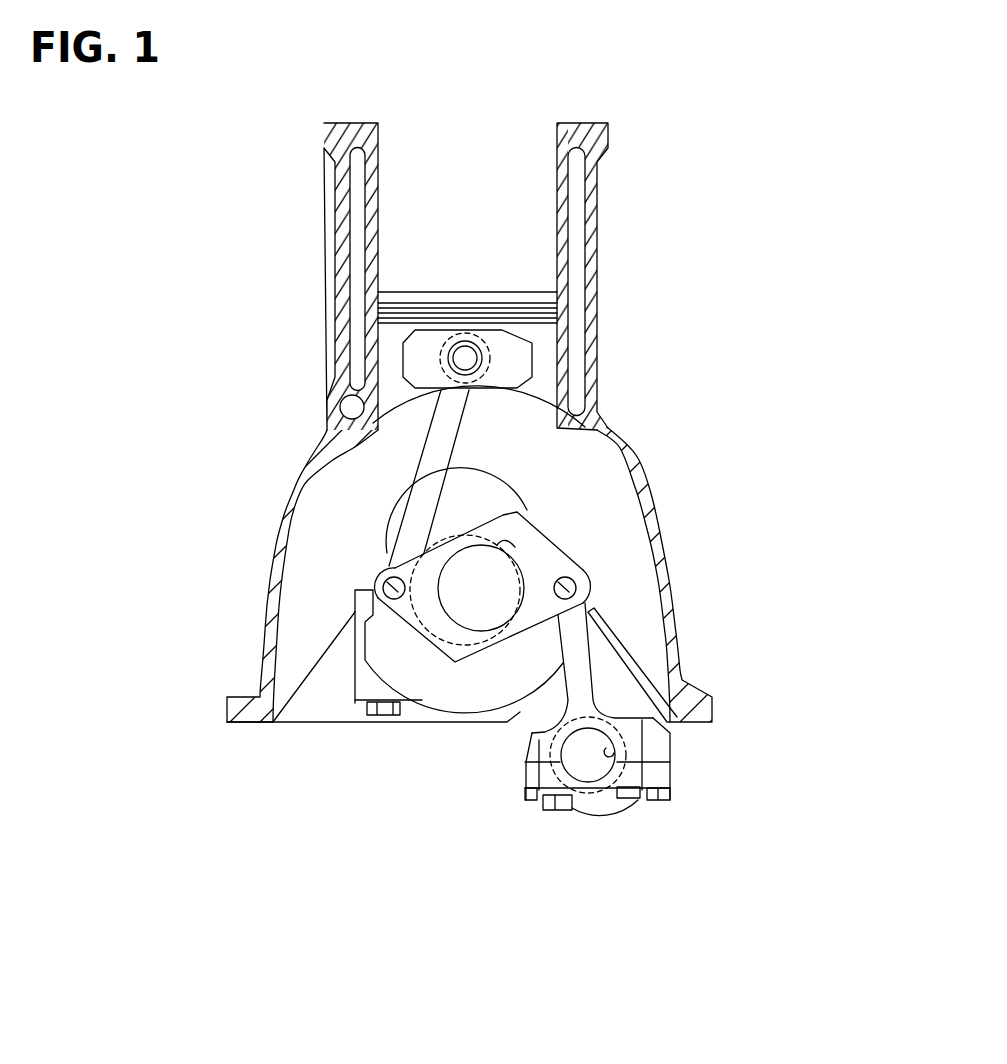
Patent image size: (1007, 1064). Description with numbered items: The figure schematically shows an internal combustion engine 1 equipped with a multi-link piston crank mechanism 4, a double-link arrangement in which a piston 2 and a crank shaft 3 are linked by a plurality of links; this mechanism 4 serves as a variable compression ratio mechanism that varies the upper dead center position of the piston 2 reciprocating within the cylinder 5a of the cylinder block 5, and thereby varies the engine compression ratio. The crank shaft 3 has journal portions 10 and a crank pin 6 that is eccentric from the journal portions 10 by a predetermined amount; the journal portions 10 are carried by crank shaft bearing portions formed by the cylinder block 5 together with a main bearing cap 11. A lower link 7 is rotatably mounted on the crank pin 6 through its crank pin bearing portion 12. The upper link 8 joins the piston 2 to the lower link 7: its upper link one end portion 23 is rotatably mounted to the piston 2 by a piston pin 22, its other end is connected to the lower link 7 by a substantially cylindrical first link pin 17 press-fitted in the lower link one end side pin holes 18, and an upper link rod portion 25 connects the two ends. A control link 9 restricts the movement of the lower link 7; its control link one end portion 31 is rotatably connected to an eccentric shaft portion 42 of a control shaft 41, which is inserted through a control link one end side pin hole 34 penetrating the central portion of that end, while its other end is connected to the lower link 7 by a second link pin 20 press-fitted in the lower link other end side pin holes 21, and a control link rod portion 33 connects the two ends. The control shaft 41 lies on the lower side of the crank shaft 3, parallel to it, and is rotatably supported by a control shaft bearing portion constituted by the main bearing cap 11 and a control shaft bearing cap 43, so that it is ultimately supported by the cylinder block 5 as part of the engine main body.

The internal combustion engine 1 is at (638, 378).
The piston 2 is at (545, 345).
The crank shaft 3 is at (453, 709).
The multi-link piston crank mechanism 4 is at (570, 528).
The cylinder block 5 is at (598, 235).
The cylinder 5a is at (557, 203).
The crank pin 6 is at (480, 594).
The lower link 7 is at (560, 570).
The upper link 8 is at (440, 457).
The control link 9 is at (577, 655).
The journal portions 10 is at (418, 620).
The main bearing cap 11 is at (370, 687).
The crank pin bearing portion 12 is at (507, 543).
The first link pin 17 is at (393, 587).
The lower link one end side pin hole 18 is at (387, 600).
The second link pin 20 is at (588, 598).
The lower link other end side pin hole 21 is at (573, 590).
The piston pin 22 is at (465, 358).
The upper link one end portion 23 is at (335, 380).
The upper link rod portion 25 is at (442, 440).
The control link one end portion 31 is at (627, 728).
The control link rod portion 33 is at (683, 697).
The control link one end side pin hole 34 is at (610, 755).
The control shaft 41 is at (563, 782).
The eccentric shaft portion 42 is at (588, 758).
The control shaft bearing cap 43 is at (657, 775).